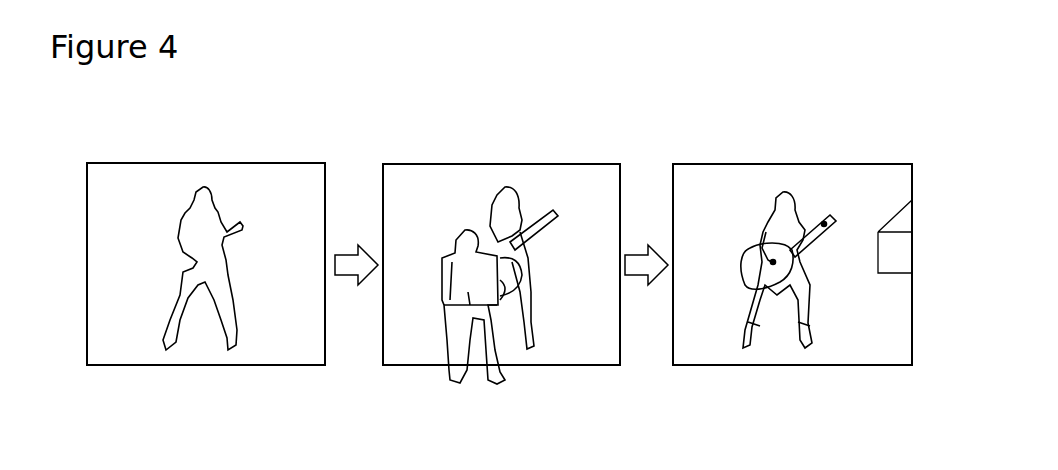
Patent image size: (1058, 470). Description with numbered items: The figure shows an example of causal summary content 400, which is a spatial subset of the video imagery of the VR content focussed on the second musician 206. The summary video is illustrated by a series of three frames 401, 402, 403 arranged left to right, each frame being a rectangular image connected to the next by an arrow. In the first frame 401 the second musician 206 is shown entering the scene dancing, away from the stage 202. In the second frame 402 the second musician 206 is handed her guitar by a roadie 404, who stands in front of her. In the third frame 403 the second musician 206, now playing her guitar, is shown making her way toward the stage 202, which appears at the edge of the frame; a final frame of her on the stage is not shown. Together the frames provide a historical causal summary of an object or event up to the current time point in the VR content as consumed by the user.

The causal summary content 400 is at (397, 77).
The first frame 401 is at (262, 163).
The second frame 402 is at (570, 164).
The third frame 403 is at (818, 164).
The roadie 404 is at (485, 382).
The second musician 206 is at (202, 200).
The stage 202 is at (892, 252).